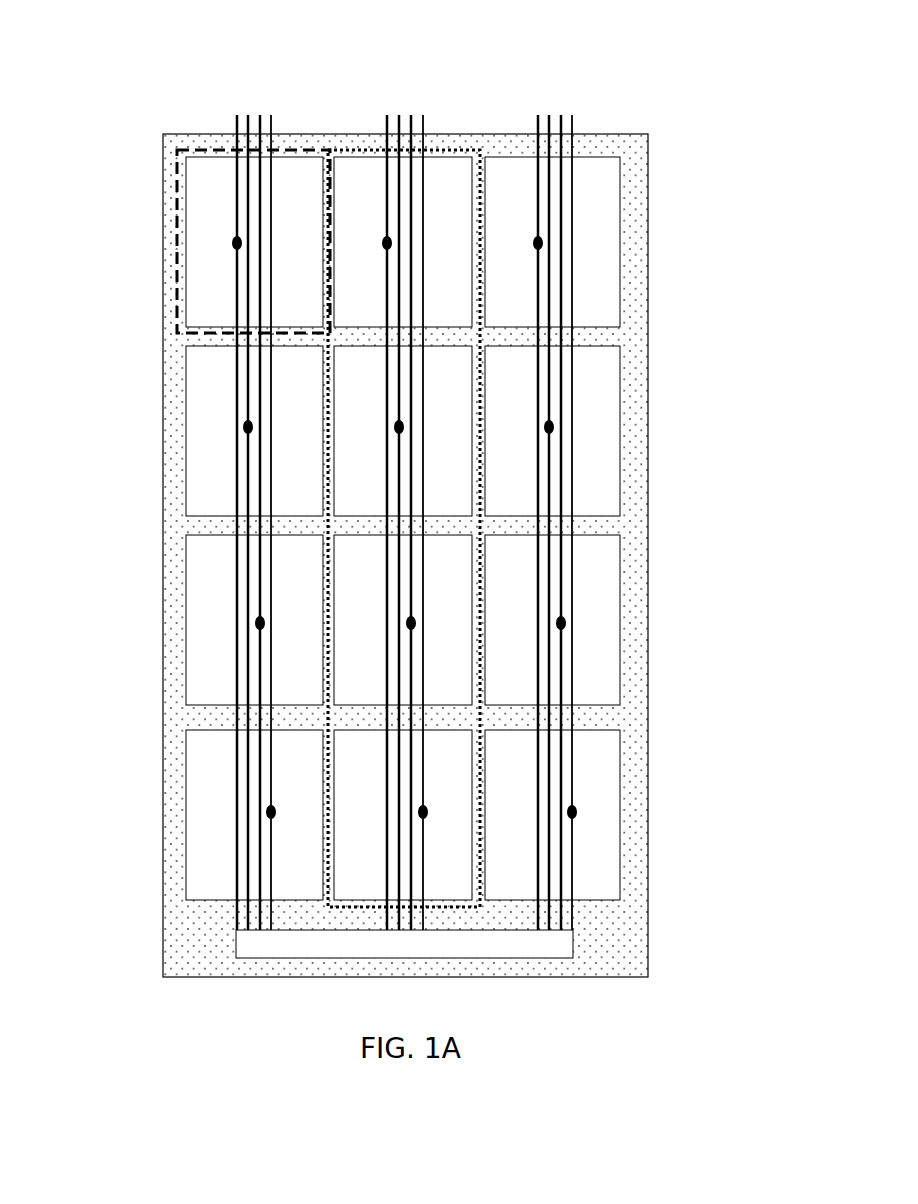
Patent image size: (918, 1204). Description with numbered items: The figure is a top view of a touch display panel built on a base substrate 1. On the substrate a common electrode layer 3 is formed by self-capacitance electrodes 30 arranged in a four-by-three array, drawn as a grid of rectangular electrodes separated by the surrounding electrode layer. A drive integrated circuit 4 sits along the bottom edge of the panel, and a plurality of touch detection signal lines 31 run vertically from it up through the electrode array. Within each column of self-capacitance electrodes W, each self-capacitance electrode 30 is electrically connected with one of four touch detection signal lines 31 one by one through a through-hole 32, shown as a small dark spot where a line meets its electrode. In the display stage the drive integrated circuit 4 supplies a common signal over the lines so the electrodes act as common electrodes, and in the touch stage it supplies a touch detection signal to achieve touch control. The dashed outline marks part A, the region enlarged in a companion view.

The base substrate 1 is at (647, 607).
The common electrode layer 3 is at (640, 197).
The self-capacitance electrode 30 is at (620, 280).
The touch detection signal line 31 is at (272, 115).
The through-hole 32 is at (555, 427).
The drive integrated circuit 4 is at (573, 943).
The part A is at (173, 187).
The column of self-capacitance electrodes W is at (460, 135).